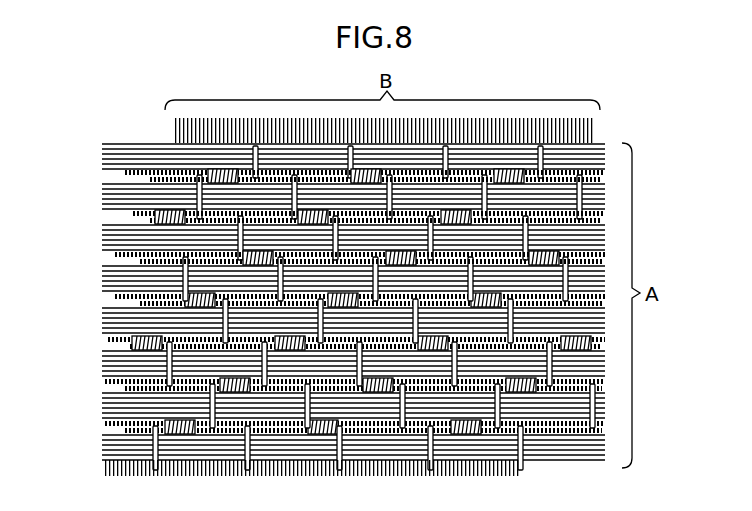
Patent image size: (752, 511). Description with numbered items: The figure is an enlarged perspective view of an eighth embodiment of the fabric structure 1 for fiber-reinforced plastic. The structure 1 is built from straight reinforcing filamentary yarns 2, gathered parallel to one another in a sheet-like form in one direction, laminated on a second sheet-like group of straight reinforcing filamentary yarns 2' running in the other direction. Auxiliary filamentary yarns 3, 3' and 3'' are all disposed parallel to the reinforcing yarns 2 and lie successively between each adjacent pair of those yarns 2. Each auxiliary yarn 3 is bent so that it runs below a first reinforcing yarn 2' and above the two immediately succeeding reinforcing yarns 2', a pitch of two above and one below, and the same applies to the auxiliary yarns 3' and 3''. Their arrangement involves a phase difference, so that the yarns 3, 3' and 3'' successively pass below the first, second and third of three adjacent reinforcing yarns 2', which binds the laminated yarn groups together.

The fabric structure 1 is at (95, 343).
The reinforcing filamentary yarns 2 is at (331, 153).
The reinforcing filamentary yarns 2' is at (356, 118).
The auxiliary filamentary yarn 3 is at (331, 180).
The auxiliary filamentary yarn 3' is at (331, 220).
The auxiliary filamentary yarn 3'' is at (331, 260).